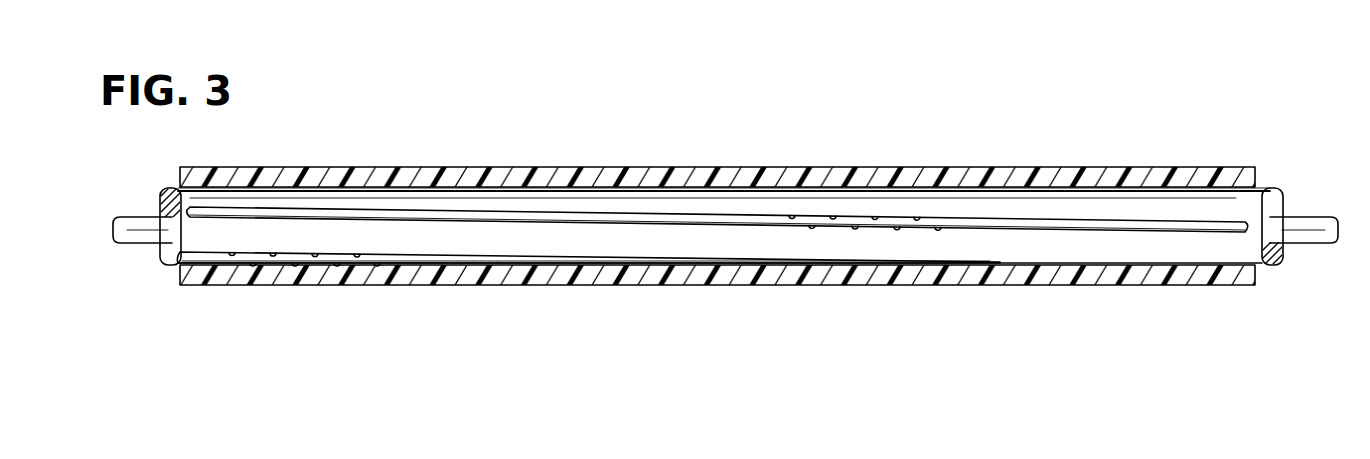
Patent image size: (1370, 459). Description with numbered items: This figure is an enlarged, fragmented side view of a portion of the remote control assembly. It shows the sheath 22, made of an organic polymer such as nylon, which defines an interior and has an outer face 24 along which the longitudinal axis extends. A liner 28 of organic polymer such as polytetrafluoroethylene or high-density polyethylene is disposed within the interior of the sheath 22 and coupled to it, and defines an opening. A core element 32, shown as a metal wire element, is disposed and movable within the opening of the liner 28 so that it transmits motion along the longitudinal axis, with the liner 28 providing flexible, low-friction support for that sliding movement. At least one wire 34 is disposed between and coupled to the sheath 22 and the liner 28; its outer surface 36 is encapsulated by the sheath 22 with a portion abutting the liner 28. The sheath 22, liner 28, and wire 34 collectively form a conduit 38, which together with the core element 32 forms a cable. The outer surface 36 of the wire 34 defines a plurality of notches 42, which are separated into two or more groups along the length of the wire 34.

The sheath 22 is at (632, 176).
The outer face 24 is at (705, 167).
The liner 28 is at (1266, 205).
The core element 32 is at (1298, 215).
The wire 34 is at (185, 260).
The outer surface 36 is at (202, 264).
The conduit 38 is at (1104, 131).
The notches 42 is at (273, 275).